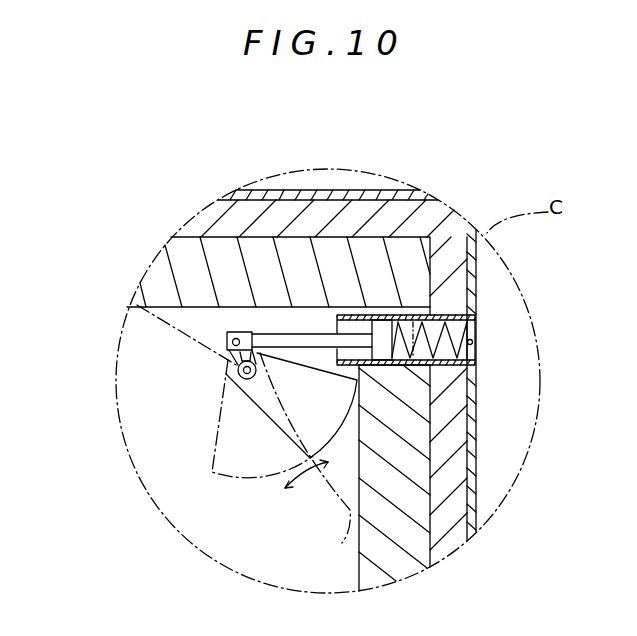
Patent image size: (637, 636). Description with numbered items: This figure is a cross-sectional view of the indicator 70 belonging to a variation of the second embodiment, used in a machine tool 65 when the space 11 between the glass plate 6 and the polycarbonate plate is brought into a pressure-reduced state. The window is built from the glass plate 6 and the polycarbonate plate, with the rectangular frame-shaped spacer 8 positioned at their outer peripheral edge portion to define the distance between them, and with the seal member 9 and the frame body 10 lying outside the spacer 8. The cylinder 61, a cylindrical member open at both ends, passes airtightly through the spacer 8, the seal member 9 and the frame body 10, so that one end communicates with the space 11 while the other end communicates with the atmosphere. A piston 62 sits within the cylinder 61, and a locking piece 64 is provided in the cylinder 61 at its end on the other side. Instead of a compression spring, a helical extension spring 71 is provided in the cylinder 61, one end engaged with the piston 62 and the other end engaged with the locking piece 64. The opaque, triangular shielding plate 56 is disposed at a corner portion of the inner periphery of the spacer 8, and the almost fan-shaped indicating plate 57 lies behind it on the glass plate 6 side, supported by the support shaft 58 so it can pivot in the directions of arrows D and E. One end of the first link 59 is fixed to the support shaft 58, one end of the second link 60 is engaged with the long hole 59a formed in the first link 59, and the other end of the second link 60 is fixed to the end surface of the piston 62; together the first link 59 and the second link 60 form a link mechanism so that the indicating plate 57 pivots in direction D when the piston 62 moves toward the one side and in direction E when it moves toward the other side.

The glass plate 6 is at (192, 540).
The spacer 8 is at (160, 263).
The seal member 9 is at (447, 208).
The frame body 10 is at (407, 193).
The space 11 is at (147, 467).
The shielding plate 56 is at (380, 478).
The indicating plate 57 is at (272, 432).
The support shaft 58 is at (254, 347).
The first link 59 is at (238, 372).
The long hole 59a is at (252, 352).
The second link 60 is at (284, 338).
The cylinder 61 is at (467, 303).
The piston 62 is at (387, 318).
The locking piece 64 is at (472, 344).
The machine tool 65 is at (52, 346).
The indicator 70 is at (314, 514).
The helical extension spring 71 is at (466, 367).